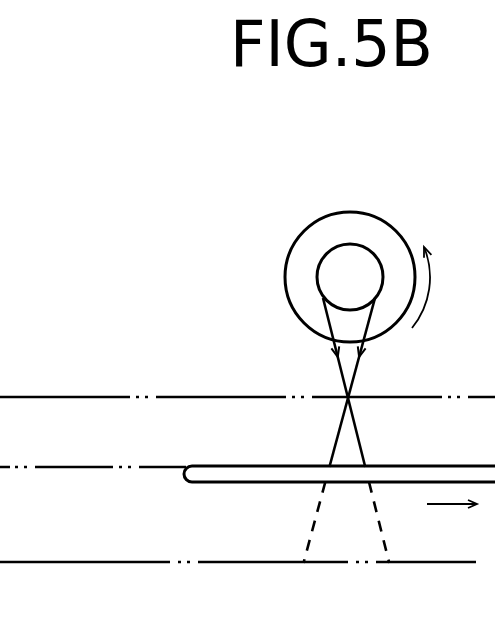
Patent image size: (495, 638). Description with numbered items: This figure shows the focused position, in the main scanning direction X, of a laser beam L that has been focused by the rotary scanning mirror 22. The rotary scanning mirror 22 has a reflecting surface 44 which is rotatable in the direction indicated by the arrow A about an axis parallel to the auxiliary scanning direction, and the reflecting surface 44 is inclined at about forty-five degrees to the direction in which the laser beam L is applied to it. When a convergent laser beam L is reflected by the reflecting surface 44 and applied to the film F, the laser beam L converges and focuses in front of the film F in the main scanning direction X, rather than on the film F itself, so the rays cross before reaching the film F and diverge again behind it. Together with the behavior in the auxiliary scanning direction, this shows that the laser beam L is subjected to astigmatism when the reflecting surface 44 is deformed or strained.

The reflecting surface 44 is at (323, 238).
The rotary scanning mirror 22 is at (388, 182).
The laser beam L is at (358, 372).
The arrow indicating direction of rotation A is at (424, 270).
The film F is at (428, 471).
The main scanning direction X is at (461, 504).